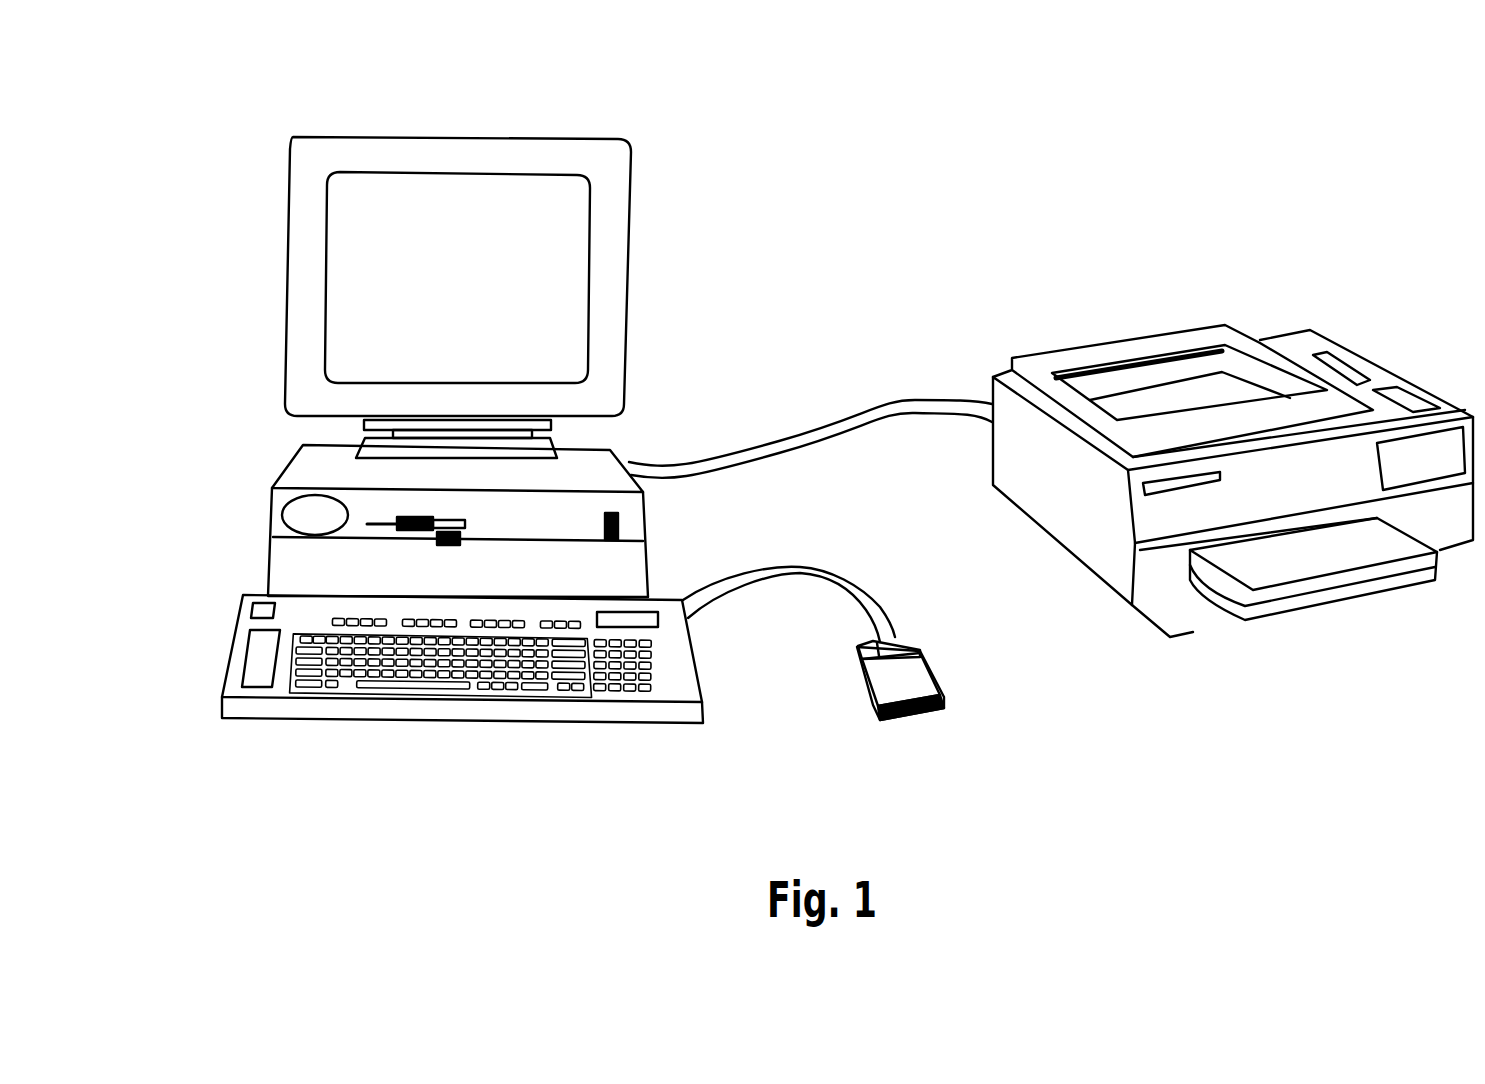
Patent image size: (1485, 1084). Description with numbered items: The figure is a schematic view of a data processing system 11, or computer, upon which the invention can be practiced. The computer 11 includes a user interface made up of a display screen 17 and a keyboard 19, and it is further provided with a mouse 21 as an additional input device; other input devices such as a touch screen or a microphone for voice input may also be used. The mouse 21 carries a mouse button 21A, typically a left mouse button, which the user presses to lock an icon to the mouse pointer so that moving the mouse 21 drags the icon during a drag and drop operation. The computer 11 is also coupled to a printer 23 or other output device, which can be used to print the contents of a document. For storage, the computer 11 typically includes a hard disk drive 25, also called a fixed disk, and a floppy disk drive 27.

The data processing system 11 is at (608, 447).
The display screen 17 is at (632, 162).
The keyboard 19 is at (463, 722).
The mouse 21 is at (858, 681).
The mouse button 21A is at (867, 646).
The printer 23 is at (1125, 338).
The hard disk drive 25 is at (355, 559).
The floppy disk drive 27 is at (377, 522).